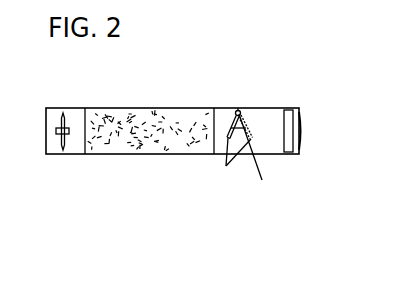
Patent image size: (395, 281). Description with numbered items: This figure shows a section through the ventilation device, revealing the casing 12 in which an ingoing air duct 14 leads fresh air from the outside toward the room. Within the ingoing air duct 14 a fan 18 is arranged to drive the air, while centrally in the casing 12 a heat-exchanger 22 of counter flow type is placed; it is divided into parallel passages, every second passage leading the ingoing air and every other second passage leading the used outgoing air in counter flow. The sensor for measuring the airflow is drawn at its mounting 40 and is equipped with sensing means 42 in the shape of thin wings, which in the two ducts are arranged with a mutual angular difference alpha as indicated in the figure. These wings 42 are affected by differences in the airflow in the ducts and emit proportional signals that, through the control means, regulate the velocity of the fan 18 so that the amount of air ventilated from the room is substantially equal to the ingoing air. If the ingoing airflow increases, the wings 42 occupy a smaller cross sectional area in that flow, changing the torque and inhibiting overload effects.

The casing 12 is at (145, 108).
The ingoing air duct 14 is at (272, 115).
The fan 18 is at (63, 143).
The heat-exchanger 22 is at (127, 138).
The pivot lever 40 is at (237, 111).
The sensing means 42 is at (238, 157).